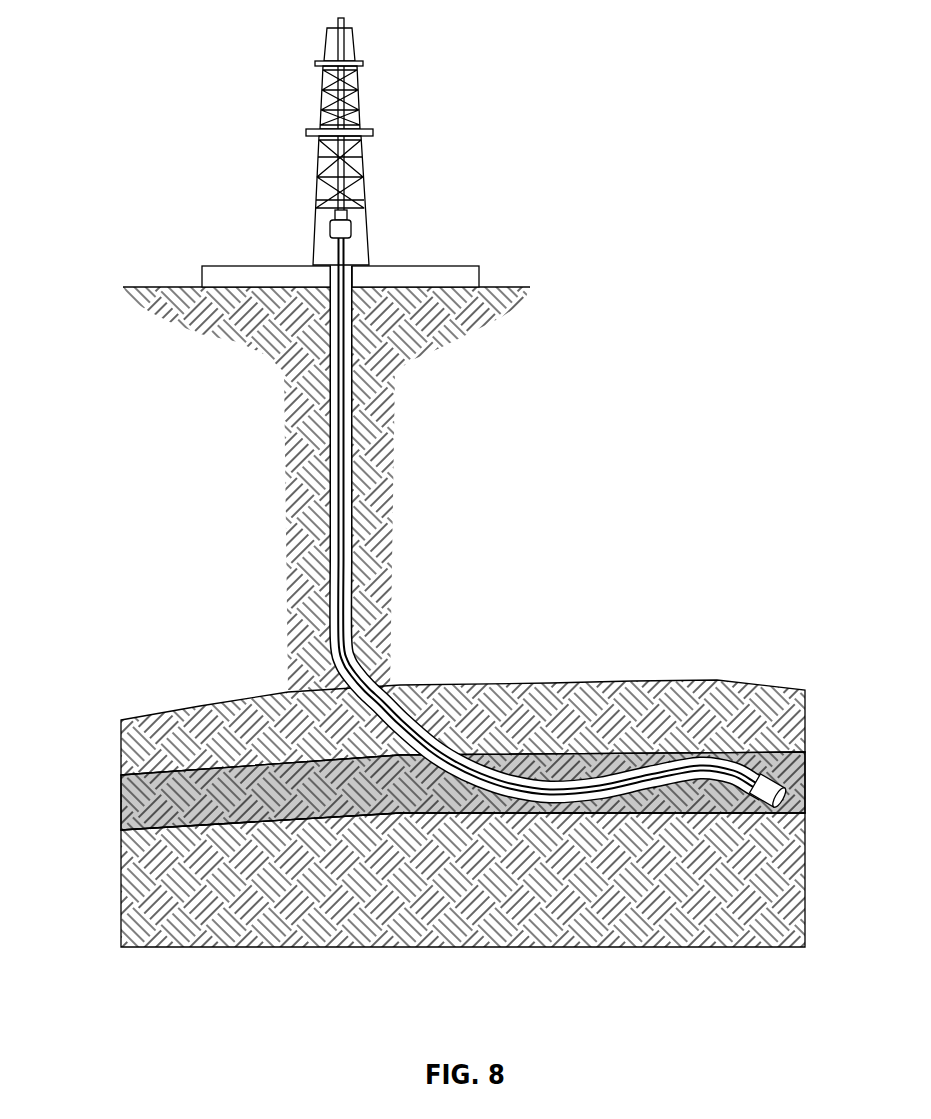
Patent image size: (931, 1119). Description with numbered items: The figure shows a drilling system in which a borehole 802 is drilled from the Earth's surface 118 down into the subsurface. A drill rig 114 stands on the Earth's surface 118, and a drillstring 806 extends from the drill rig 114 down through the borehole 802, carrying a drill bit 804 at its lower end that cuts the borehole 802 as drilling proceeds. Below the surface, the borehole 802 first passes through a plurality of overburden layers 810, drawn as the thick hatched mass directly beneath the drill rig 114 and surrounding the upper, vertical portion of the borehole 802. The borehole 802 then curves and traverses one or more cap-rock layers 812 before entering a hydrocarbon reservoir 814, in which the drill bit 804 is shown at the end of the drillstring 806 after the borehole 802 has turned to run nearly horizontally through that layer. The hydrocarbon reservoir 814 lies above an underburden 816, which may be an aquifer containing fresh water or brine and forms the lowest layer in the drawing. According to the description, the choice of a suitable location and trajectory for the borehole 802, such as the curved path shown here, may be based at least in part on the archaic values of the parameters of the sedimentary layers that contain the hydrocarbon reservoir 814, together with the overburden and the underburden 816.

The drill rig 114 is at (362, 165).
The Earth's surface 118 is at (517, 286).
The borehole 802 is at (331, 425).
The drill bit 804 is at (770, 778).
The drillstring 806 is at (345, 251).
The overburden layers 810 is at (382, 415).
The cap-rock layers 812 is at (132, 744).
The hydrocarbon reservoir 814 is at (120, 817).
The underburden 816 is at (122, 922).